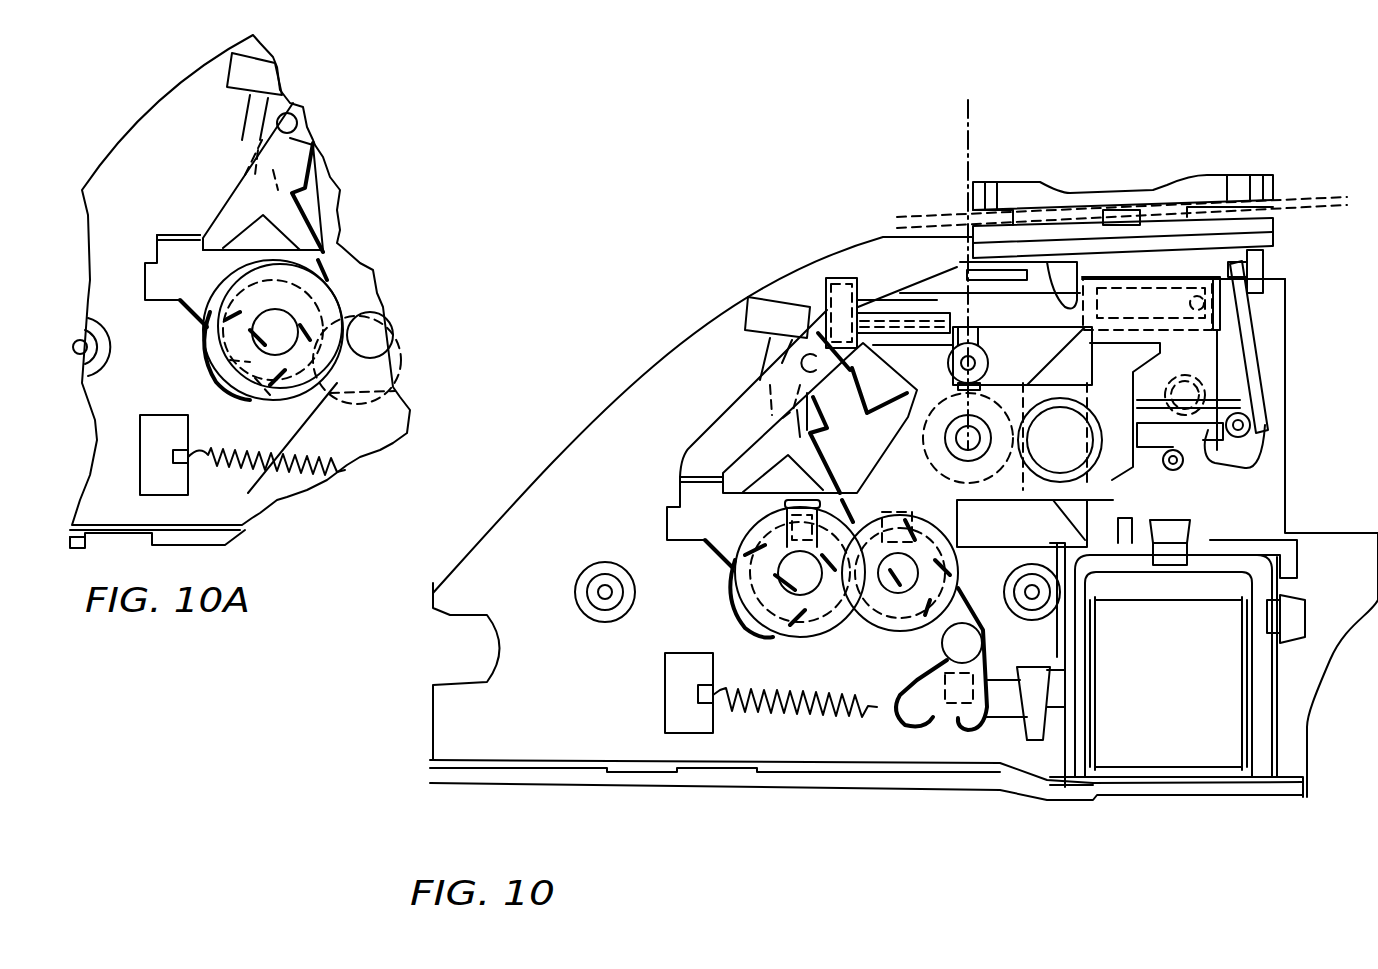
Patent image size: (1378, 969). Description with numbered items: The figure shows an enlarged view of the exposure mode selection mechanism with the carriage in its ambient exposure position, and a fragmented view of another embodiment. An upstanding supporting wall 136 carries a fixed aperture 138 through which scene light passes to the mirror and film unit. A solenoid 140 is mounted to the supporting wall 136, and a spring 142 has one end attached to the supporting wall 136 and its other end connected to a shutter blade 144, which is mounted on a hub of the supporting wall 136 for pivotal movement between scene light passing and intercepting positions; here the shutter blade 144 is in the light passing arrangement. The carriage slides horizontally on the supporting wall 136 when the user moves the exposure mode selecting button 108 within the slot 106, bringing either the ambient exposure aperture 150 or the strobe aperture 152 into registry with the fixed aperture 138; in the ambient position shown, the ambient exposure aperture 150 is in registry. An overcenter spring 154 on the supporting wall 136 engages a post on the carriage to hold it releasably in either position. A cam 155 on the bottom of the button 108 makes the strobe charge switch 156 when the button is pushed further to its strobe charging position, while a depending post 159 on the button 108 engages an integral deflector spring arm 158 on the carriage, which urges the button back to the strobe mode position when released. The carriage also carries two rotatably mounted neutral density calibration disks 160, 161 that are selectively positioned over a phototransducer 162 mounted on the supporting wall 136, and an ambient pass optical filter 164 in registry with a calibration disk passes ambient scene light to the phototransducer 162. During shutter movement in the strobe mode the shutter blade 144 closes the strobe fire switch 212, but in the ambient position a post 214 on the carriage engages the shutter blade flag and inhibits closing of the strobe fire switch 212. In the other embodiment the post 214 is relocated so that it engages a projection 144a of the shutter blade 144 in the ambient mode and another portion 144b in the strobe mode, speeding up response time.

In FIG. 10, the slot 106 is at (1163, 217).
In FIG. 10, the exposure mode selecting button 108 is at (1015, 183).
In FIG. 10, the supporting wall 136 is at (567, 457).
In FIG. 10, the fixed aperture 138 is at (1000, 332).
In FIG. 10, the solenoid 140 is at (1183, 747).
In FIG. 10, the spring 142 is at (810, 707).
In FIG. 10, the shutter blade 144 is at (880, 455).
In FIG. 10A, the projection 144a is at (388, 362).
In FIG. 10A, the another portion 144b is at (230, 372).
In FIG. 10, the ambient exposure aperture 150 is at (987, 507).
In FIG. 10, the strobe aperture 152 is at (1073, 477).
In FIG. 10, the overcenter spring 154 is at (1257, 403).
In FIG. 10, the cam 155 is at (1067, 273).
In FIG. 10, the strobe charge switch 156 is at (843, 277).
In FIG. 10, the deflector spring arm 158 is at (1252, 373).
In FIG. 10, the depending post 159 is at (1258, 262).
In FIG. 10A, the neutral density calibration disk 160 is at (268, 449).
In FIG. 10, the neutral density calibration disk 160 is at (907, 632).
In FIG. 10A, the neutral density calibration disk 161 is at (203, 320).
In FIG. 10, the neutral density calibration disk 161 is at (797, 647).
In FIG. 10A, the phototransducer 162 is at (247, 227).
In FIG. 10, the phototransducer 162 is at (770, 455).
In FIG. 10A, the ambient pass optical filter 164 is at (240, 283).
In FIG. 10, the ambient pass optical filter 164 is at (757, 523).
In FIG. 10, the strobe fire switch 212 is at (763, 313).
In FIG. 10A, the post 214 is at (270, 405).
In FIG. 10, the post 214 is at (820, 360).